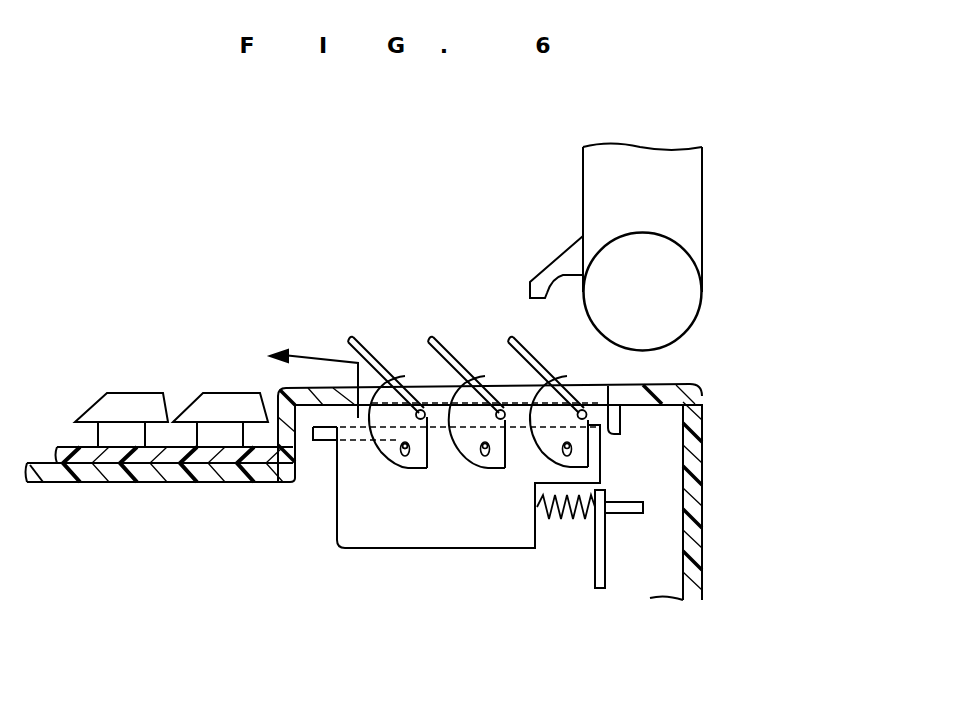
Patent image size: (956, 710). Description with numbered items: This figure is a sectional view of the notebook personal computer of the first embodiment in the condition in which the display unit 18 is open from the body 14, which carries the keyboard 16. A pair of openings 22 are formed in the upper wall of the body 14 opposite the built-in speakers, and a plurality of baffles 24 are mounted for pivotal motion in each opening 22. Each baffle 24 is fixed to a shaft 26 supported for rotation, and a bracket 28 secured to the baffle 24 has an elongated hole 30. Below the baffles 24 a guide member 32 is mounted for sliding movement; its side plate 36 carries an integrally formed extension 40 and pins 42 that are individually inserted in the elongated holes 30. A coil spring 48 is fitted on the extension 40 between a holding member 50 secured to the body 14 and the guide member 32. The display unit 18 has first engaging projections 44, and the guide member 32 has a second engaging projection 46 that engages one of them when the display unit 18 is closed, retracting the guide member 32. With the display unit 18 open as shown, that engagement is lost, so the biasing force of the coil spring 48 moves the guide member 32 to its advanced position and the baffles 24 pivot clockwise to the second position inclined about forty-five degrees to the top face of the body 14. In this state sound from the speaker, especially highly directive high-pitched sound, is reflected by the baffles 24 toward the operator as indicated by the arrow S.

The body 14 is at (705, 483).
The keyboard 16 is at (130, 393).
The display unit 18 is at (697, 210).
The openings 22 is at (417, 392).
The baffles 24 is at (377, 362).
The shaft 26 is at (428, 420).
The bracket 28 is at (378, 450).
The elongated hole 30 is at (405, 456).
The guide member 32 is at (445, 558).
The side plate 36 is at (395, 550).
The extension 40 is at (617, 512).
The pins 42 is at (402, 446).
The first engaging projections 44 is at (558, 262).
The second engaging projection 46 is at (617, 397).
The coil spring 48 is at (565, 518).
The holding member 50 is at (597, 557).
The arrow S is at (323, 360).